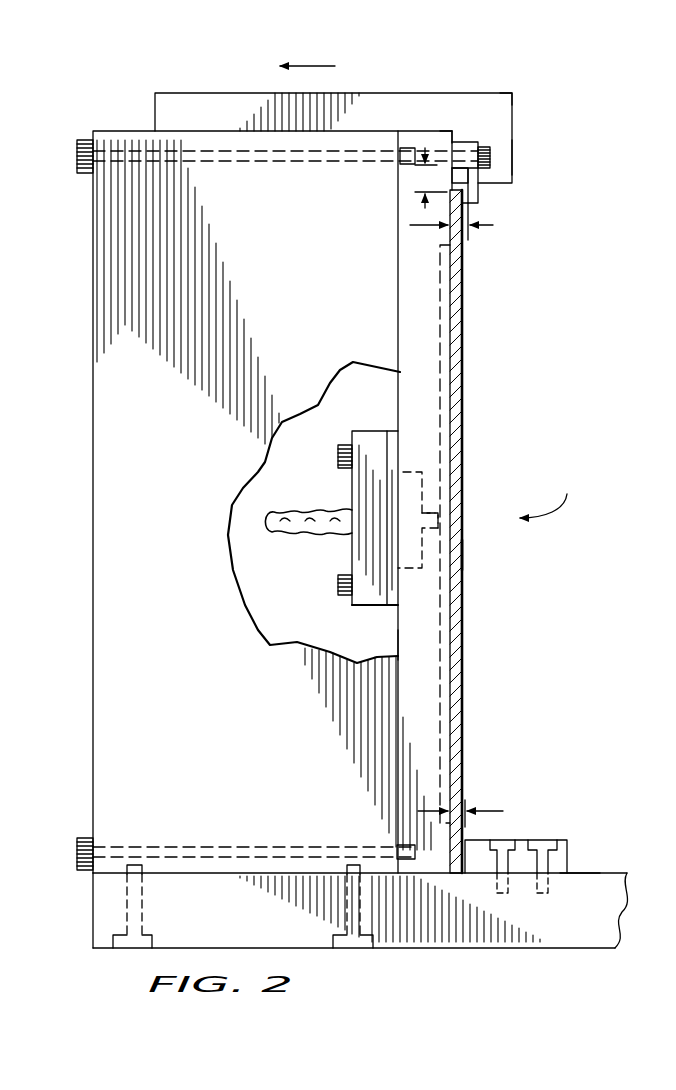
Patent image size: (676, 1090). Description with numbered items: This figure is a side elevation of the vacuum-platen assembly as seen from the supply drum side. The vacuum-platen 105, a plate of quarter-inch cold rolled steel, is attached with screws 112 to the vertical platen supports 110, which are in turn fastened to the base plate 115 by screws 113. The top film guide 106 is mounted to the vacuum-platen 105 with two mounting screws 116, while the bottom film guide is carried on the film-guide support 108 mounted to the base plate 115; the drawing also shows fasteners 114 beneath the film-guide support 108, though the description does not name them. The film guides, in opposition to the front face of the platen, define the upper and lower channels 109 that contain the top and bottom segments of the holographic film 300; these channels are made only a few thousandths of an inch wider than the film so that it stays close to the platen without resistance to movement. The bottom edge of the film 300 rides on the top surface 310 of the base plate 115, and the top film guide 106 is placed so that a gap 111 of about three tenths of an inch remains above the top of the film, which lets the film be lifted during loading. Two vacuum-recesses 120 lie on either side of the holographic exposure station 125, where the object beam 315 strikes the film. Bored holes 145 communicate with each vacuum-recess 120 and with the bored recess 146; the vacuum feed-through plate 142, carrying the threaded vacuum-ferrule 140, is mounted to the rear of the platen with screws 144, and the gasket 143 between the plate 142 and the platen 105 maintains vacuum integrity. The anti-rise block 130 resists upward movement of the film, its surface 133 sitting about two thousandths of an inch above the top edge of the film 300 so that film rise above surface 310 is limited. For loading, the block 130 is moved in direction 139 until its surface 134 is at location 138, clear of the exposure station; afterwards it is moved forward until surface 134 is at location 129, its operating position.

The vacuum-platen 105 is at (416, 652).
The top film guide 106 is at (480, 191).
The film-guide support 108 is at (520, 842).
The channels 109 is at (493, 226).
The vertical platen supports 110 is at (93, 412).
The gap 111 is at (422, 178).
The screws 112 is at (78, 150).
The screws 113 is at (130, 949).
The T-bolt slot 114 is at (540, 893).
The base plate 115 is at (605, 890).
The mounting screws 116 is at (486, 147).
The vacuum-recesses 120 is at (443, 607).
The holographic exposure station 125 is at (462, 555).
The location 129 is at (512, 93).
The anti-rise block 130 is at (206, 78).
The surface 133 is at (505, 184).
The surface 134 is at (513, 156).
The location 138 is at (452, 131).
The direction 139 is at (335, 66).
The vacuum-ferrule 140 is at (272, 532).
The vacuum feed-through plate 142 is at (368, 598).
The gasket 143 is at (395, 598).
The screws 144 is at (338, 448).
The bored holes 145 is at (432, 514).
The bored recess 146 is at (413, 466).
The holographic film 300 is at (462, 298).
The top surface of the base plate 310 is at (580, 868).
The object beam 315 is at (553, 495).